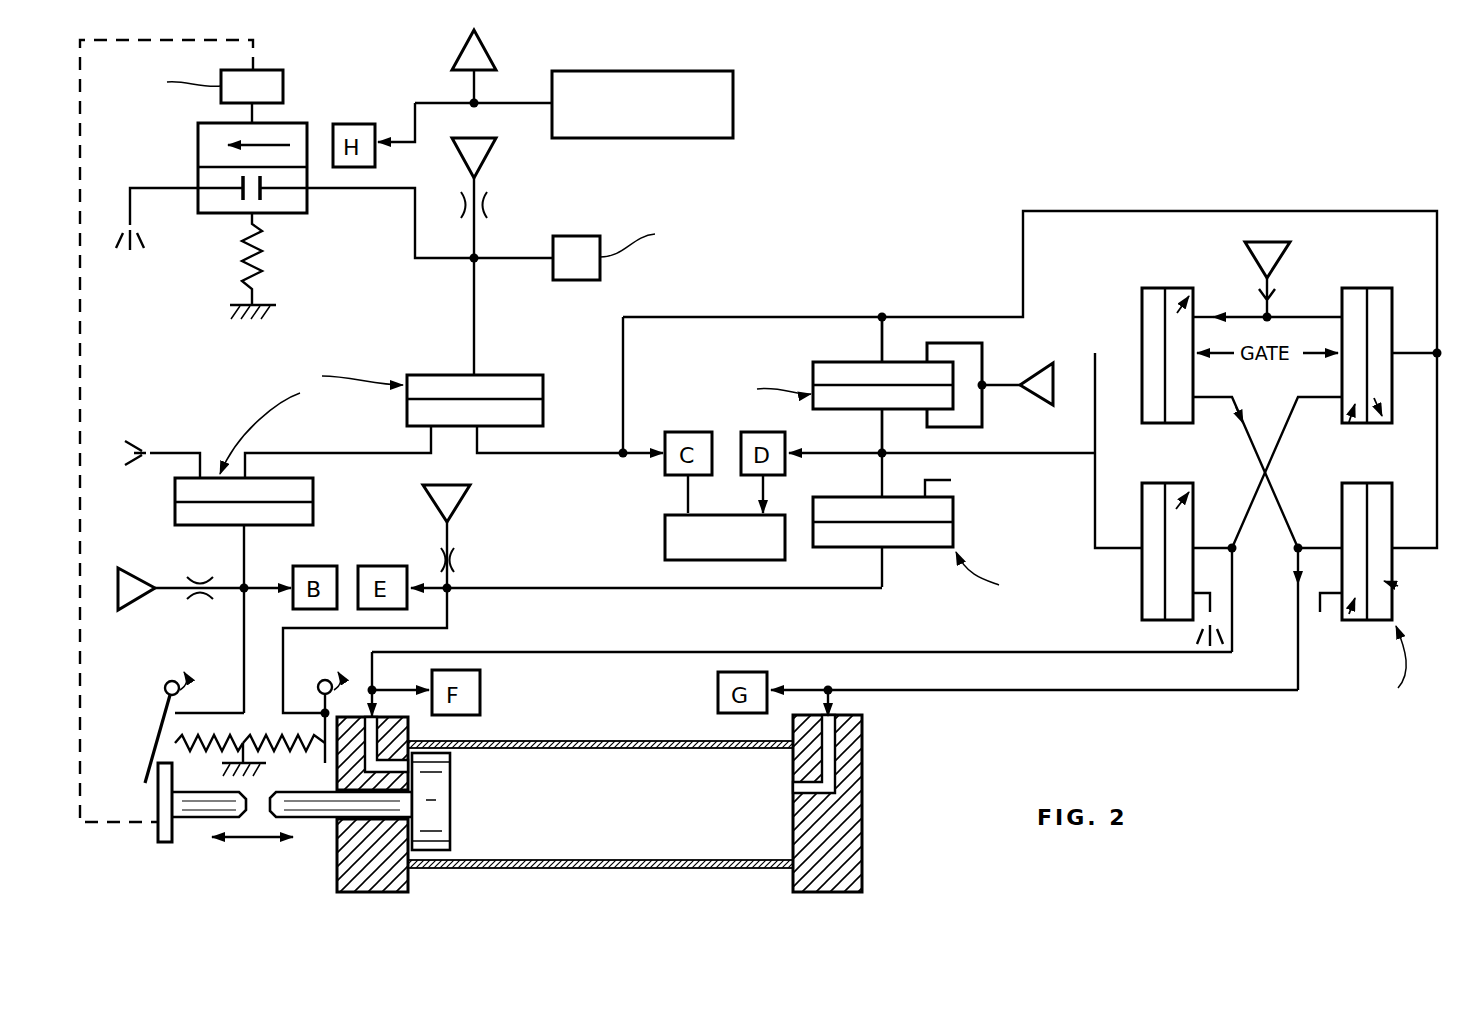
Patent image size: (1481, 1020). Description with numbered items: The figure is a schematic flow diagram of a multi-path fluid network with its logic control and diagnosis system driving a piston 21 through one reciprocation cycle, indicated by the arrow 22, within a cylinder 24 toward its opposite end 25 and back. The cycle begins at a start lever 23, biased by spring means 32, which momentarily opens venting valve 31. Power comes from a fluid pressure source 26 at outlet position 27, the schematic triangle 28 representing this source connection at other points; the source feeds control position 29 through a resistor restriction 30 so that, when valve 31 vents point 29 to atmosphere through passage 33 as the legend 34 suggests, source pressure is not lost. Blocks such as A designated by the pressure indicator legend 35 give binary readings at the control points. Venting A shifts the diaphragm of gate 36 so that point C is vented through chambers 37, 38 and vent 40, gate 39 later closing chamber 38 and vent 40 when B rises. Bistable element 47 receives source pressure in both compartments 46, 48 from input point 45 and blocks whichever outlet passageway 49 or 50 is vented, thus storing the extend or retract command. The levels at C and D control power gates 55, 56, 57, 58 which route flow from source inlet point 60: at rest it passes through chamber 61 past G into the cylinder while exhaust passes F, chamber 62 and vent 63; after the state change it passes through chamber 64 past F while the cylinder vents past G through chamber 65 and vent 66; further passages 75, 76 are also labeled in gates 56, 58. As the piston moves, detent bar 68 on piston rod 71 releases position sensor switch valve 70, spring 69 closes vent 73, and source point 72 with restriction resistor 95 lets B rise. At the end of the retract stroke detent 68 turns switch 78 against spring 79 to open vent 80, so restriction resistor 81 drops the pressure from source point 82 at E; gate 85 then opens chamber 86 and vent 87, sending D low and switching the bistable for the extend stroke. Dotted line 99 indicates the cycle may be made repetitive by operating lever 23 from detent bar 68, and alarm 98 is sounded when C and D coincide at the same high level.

The piston 21 is at (452, 800).
The arrow 22 is at (256, 842).
The start lever 23 is at (283, 80).
The cylinder 24 is at (688, 832).
The opposite end 25 is at (793, 830).
The fluid pressure source 26 is at (734, 135).
The outlet position 27 is at (477, 101).
The schematic triangle 28 is at (489, 46).
The control position 29 is at (470, 262).
The resistor restriction 30 is at (490, 203).
The venting valve 31 is at (196, 143).
The spring bias means 32 is at (268, 270).
The passage 33 is at (130, 194).
The legend 34 is at (128, 256).
The pressure indicator legend 35 is at (565, 282).
The gate 36 is at (435, 372).
The chamber 37 is at (418, 414).
The chamber 38 is at (313, 486).
The gate element 39 is at (320, 519).
The vent 40 is at (179, 452).
The pressure source input point 45 is at (1035, 366).
The compartment 46 is at (815, 371).
The bistable element 47 is at (811, 378).
The compartment 48 is at (915, 396).
The outlet passageway 49 is at (878, 345).
The outlet passageway 50 is at (872, 430).
The power gate 55 is at (1152, 284).
The power gate 56 is at (1355, 284).
The power gate 57 is at (1156, 479).
The power gate 58 is at (1344, 479).
The source inlet point 60 is at (1286, 256).
The chamber 61 is at (1192, 293).
The chamber 62 is at (1195, 496).
The vent 63 is at (1205, 590).
The chamber 64 is at (1352, 413).
The chamber 65 is at (1353, 606).
The vent 66 is at (1331, 548).
The switch detent bar 68 is at (158, 794).
The spring 69 is at (218, 748).
The mechanical position sensor switch valve 70 is at (157, 738).
The piston rod 71 is at (196, 806).
The source point 72 is at (138, 573).
The vent 73 is at (210, 712).
The gate passage 75 is at (1386, 422).
The gate passage 76 is at (1402, 576).
The position sensor valve switch 78 is at (325, 759).
The spring 79 is at (270, 738).
The vent 80 is at (324, 680).
The restriction resistor 81 is at (456, 563).
The source point 82 is at (470, 506).
The gate 85 is at (953, 513).
The chamber 86 is at (866, 494).
The vent 87 is at (948, 482).
The restriction resistor 95 is at (200, 578).
The alarm 98 is at (663, 534).
The dotted line 99 is at (86, 386).